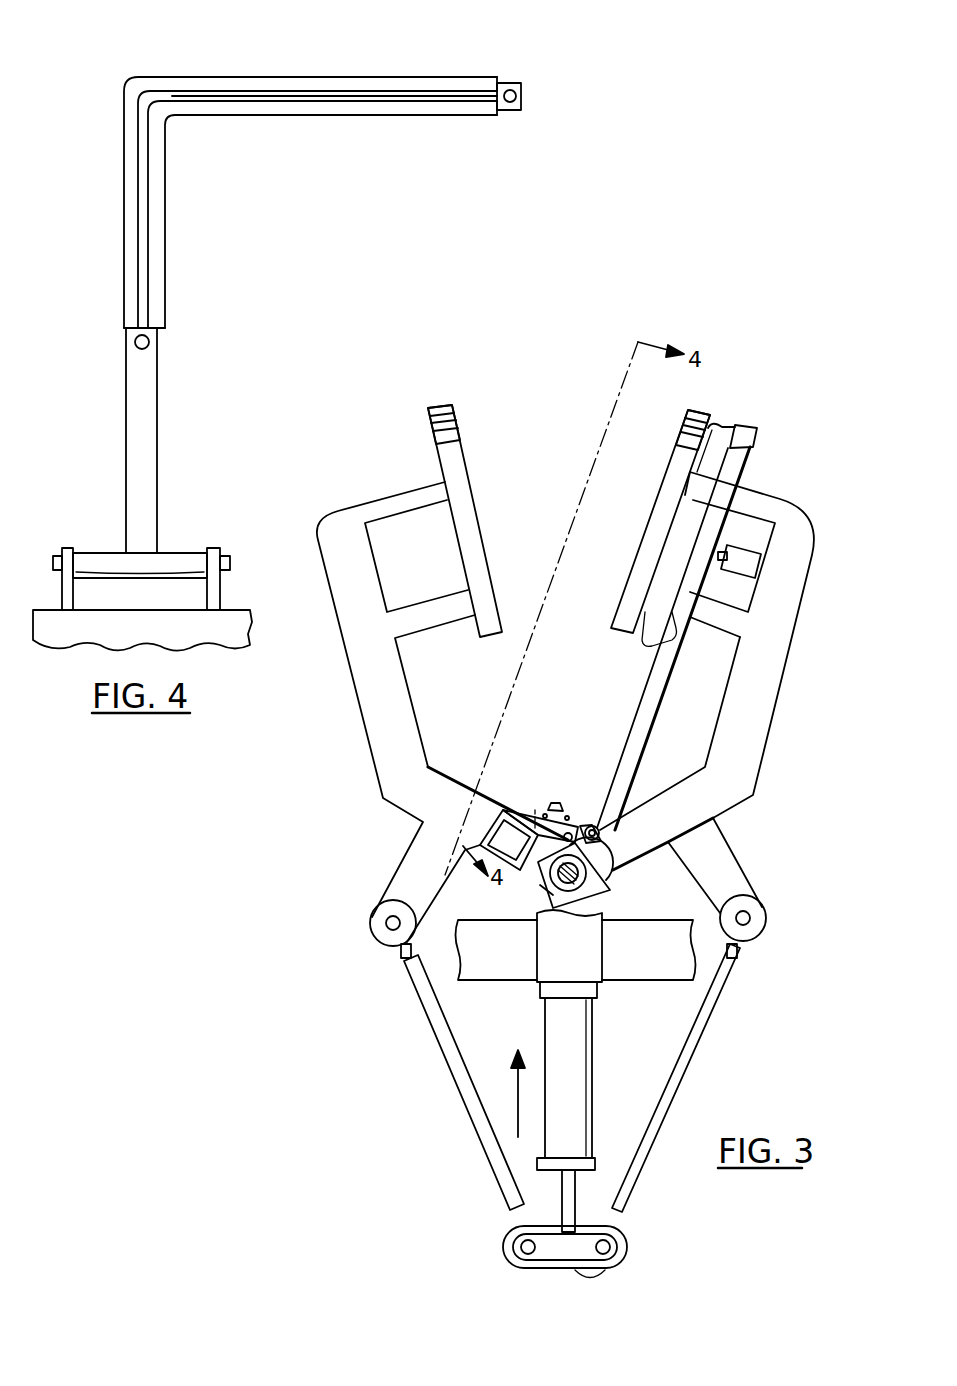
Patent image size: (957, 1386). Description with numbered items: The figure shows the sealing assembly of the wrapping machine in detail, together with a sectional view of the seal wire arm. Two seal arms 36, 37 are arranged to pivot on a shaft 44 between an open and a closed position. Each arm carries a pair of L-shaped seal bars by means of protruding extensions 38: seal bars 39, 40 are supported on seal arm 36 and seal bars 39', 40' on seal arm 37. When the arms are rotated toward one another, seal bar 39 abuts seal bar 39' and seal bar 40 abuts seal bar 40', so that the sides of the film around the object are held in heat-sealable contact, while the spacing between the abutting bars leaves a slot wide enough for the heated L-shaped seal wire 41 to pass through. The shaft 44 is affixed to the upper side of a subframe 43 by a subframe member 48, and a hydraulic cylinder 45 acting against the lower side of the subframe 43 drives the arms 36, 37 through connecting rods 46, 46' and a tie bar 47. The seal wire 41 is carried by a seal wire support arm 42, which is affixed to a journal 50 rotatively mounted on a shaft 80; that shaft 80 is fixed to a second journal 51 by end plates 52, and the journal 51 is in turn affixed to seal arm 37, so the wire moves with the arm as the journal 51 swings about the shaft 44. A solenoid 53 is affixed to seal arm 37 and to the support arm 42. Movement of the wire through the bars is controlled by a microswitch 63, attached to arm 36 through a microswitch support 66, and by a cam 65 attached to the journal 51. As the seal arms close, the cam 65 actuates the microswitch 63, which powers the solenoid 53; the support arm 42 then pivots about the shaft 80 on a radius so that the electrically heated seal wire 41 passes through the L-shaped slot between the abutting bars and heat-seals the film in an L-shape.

In FIG. 3, the seal arm 36 is at (383, 790).
In FIG. 3, the seal arm 37 is at (762, 757).
In FIG. 3, the protruding extensions 38 is at (428, 506).
In FIG. 3, the seal bar 39 is at (467, 409).
In FIG. 3, the seal bar 40 is at (474, 521).
In FIG. 3, the seal bar 39' is at (682, 416).
In FIG. 4, the seal bar 39' is at (310, 180).
In FIG. 3, the seal bar 40' is at (660, 528).
In FIG. 4, the seal bar 40' is at (322, 212).
In FIG. 3, the seal wire 41 is at (733, 428).
In FIG. 4, the seal wire 41 is at (509, 104).
In FIG. 3, the seal wire support arm 42 is at (652, 733).
In FIG. 4, the seal wire support arm 42 is at (157, 433).
In FIG. 3, the subframe 43 is at (520, 973).
In FIG. 3, the shaft 44 is at (545, 892).
In FIG. 3, the hydraulic cylinder 45 is at (588, 1078).
In FIG. 3, the connecting rod 46 is at (462, 1077).
In FIG. 3, the connecting rod 46' is at (679, 1078).
In FIG. 3, the tie bar 47 is at (620, 1272).
In FIG. 3, the subframe member 48 is at (598, 965).
In FIG. 4, the journal 50 is at (166, 552).
In FIG. 3, the journal 51 is at (548, 907).
In FIG. 4, the journal 51 is at (228, 610).
In FIG. 3, the end plates 52 is at (588, 826).
In FIG. 4, the end plates 52 is at (63, 549).
In FIG. 3, the solenoid 53 is at (732, 574).
In FIG. 3, the microswitch 63 is at (555, 803).
In FIG. 3, the cam 65 is at (613, 872).
In FIG. 3, the microswitch support 66 is at (508, 808).
In FIG. 3, the shaft 80 is at (593, 826).
In FIG. 4, the shaft 80 is at (231, 563).